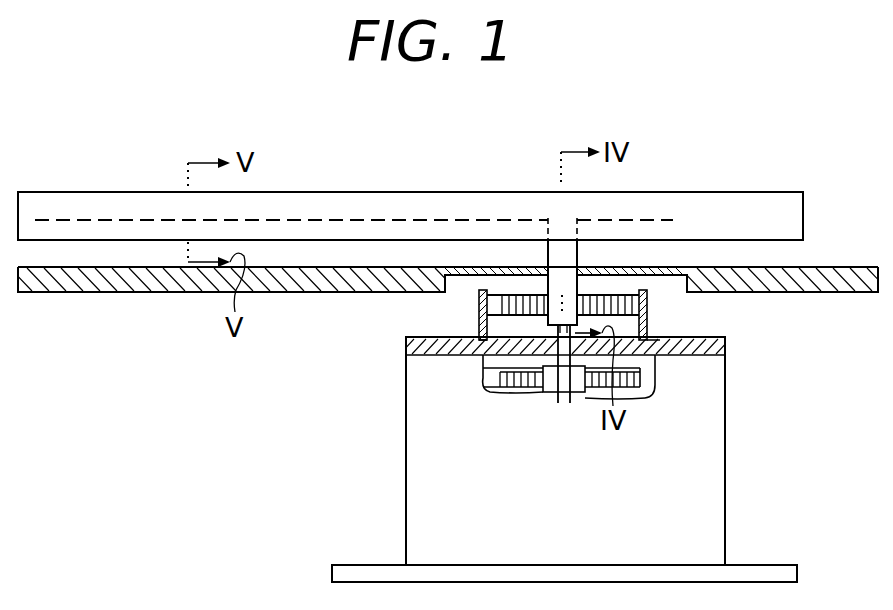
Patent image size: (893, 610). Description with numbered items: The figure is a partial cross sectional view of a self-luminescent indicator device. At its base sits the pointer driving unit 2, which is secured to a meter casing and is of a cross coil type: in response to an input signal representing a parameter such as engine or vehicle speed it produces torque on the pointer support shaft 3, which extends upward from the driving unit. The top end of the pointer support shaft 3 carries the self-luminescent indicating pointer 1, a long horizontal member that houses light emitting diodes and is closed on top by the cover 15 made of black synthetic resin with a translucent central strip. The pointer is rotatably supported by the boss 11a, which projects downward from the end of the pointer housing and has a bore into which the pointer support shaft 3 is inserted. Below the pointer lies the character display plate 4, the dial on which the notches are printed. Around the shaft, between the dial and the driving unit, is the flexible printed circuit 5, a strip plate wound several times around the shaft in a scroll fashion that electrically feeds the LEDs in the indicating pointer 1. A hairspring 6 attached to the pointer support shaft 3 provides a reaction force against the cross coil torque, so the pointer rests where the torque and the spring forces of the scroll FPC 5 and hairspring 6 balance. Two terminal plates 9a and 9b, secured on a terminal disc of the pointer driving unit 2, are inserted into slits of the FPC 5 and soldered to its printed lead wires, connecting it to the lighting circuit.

The self-luminescent indicating pointer 1 is at (378, 186).
The cover 15 is at (292, 212).
The boss 11a is at (583, 255).
The character display plate 4 is at (120, 270).
The flexible printed circuit 5 is at (513, 294).
The pointer driving unit 2 is at (705, 447).
The pointer support shaft 3 is at (563, 405).
The hairspring 6 is at (518, 392).
The terminal plate 9a is at (628, 328).
The terminal plate 9b is at (486, 318).